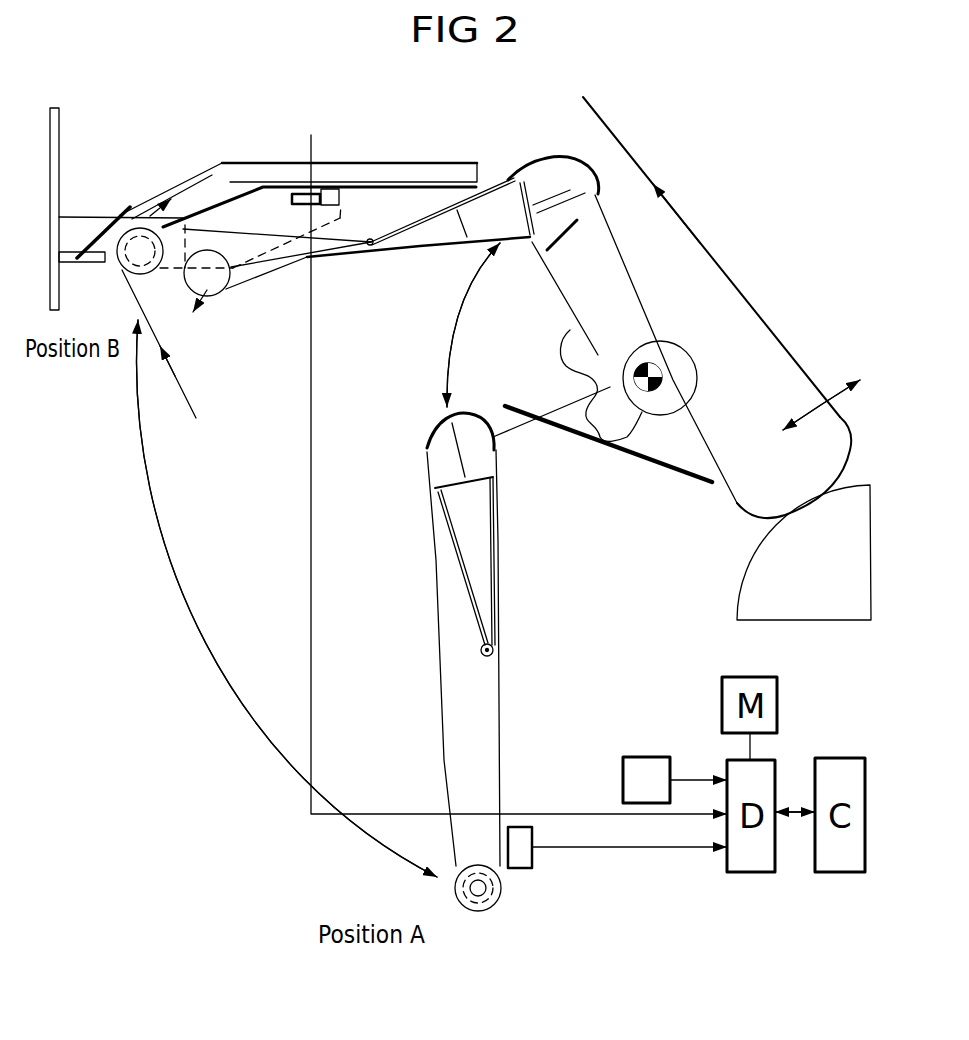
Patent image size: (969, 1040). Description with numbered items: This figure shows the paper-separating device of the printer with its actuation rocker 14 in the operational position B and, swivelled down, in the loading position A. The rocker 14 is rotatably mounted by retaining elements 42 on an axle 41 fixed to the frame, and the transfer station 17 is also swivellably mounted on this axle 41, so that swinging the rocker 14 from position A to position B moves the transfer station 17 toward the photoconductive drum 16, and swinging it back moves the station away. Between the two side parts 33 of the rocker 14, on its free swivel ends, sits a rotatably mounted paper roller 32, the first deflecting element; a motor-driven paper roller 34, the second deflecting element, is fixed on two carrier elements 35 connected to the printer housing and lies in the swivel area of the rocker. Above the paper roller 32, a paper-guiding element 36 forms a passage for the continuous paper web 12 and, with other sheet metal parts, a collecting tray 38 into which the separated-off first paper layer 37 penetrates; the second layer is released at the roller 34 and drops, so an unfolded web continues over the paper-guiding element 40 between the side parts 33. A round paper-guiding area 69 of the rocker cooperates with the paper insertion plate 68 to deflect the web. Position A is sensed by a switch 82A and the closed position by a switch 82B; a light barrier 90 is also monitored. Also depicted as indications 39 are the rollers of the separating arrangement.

The continuous paper web 12 is at (170, 364).
The actuation rocker 14 is at (500, 651).
The photoconductive drum 16 is at (757, 583).
The transfer station 17 is at (783, 370).
The paper roller 32 is at (122, 268).
The side parts 33 is at (478, 733).
The motor-driven paper roller 34 is at (207, 306).
The carrier elements 35 is at (77, 190).
The paper-guiding element 36 is at (210, 208).
The first paper layer 37 is at (133, 203).
The collecting tray 38 is at (287, 167).
The pressure roller 39 is at (182, 277).
The paper-guiding element 40 is at (457, 242).
The axle 41 is at (648, 390).
The retaining elements 42 is at (552, 412).
The paper insertion plate 68 is at (505, 407).
The paper-guiding area 69 is at (553, 164).
The switch 82A is at (532, 858).
The switch 82B is at (311, 135).
The light barrier 90 is at (675, 780).